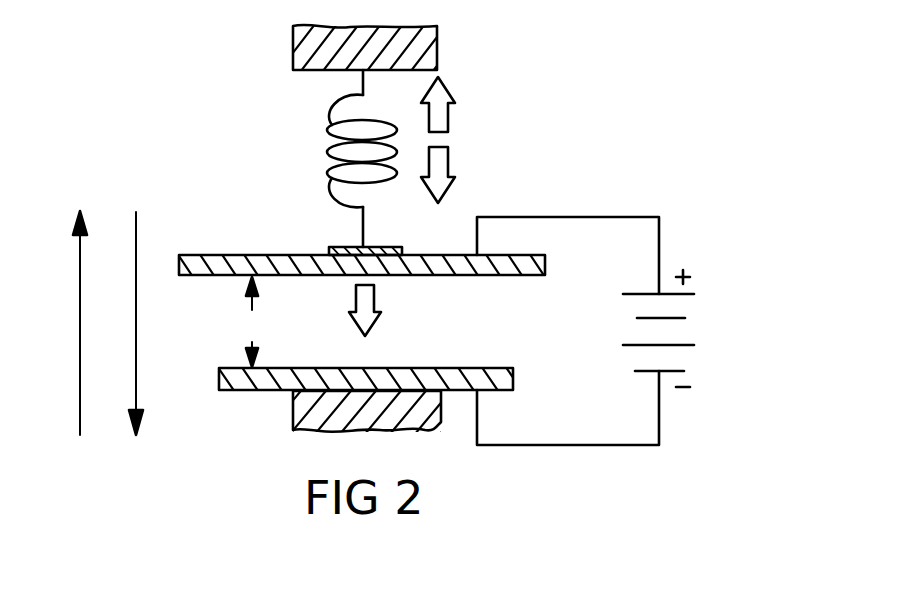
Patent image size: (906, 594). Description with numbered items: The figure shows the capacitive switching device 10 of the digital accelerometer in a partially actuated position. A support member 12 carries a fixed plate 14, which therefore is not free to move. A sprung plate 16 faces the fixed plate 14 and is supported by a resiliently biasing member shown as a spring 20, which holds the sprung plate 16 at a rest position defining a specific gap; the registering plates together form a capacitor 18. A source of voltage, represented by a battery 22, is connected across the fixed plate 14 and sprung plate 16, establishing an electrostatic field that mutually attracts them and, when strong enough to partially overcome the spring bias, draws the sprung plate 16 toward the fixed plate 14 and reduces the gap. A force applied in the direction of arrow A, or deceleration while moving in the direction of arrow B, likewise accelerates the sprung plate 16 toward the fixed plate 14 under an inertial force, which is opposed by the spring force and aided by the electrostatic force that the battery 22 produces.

The capacitive switching device 10 is at (272, 150).
The support member 12 is at (437, 41).
The fixed plate 14 is at (240, 391).
The sprung plate 16 is at (218, 255).
The capacitor 18 is at (258, 202).
The spring 20 is at (338, 104).
The battery 22 is at (706, 320).